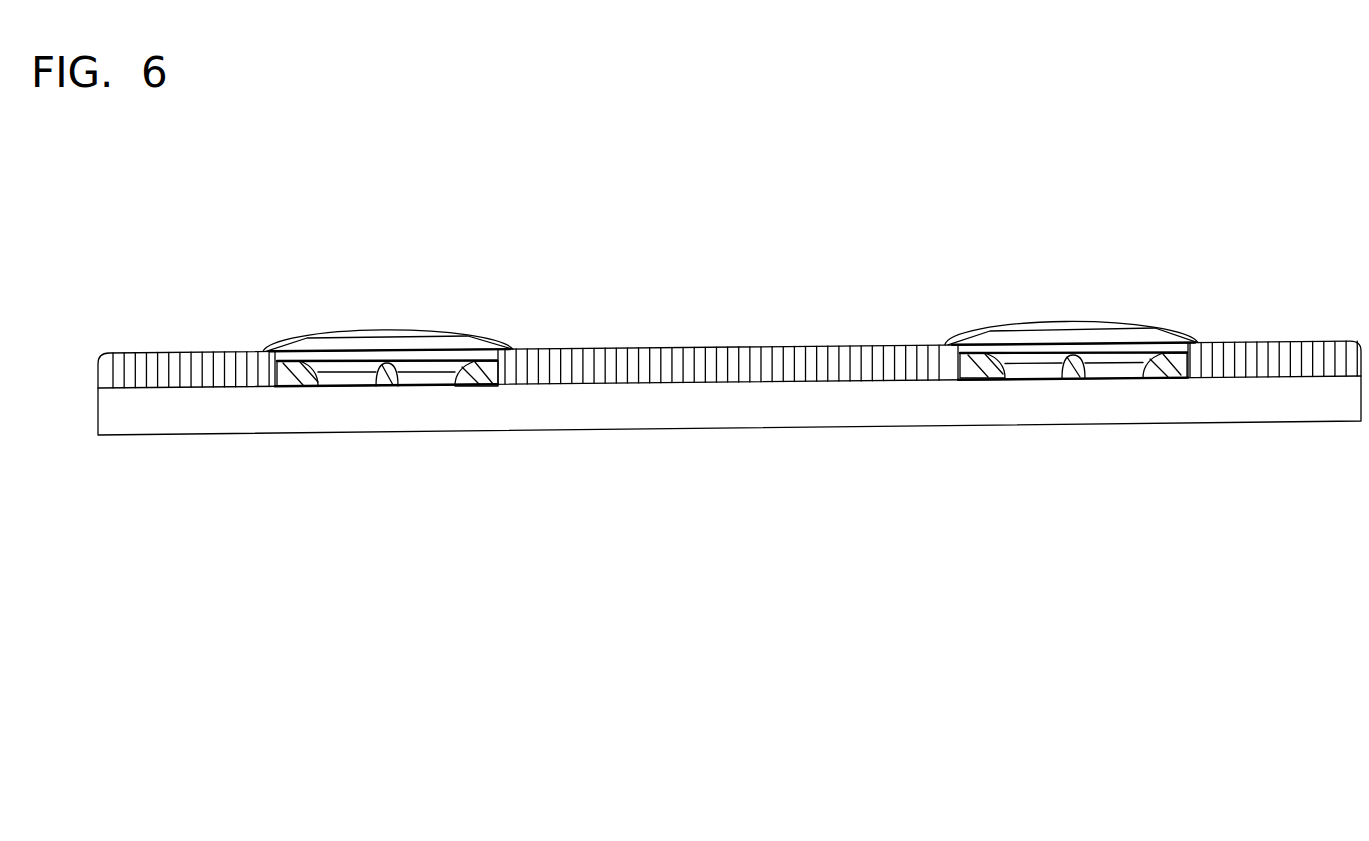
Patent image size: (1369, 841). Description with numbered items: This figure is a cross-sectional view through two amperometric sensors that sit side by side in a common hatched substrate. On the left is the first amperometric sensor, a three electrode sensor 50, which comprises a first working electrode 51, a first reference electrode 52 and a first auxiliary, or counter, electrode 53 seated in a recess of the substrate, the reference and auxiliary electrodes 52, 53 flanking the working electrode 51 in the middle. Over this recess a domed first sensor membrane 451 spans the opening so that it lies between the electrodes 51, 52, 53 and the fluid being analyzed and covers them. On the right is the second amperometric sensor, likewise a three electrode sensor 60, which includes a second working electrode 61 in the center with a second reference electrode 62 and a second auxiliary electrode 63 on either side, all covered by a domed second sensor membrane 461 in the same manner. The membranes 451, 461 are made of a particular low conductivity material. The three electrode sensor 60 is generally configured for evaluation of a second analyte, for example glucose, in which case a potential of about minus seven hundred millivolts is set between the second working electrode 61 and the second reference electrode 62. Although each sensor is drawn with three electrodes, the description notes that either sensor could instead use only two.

The three electrode sensor 50 is at (407, 359).
The first sensor membrane 451 is at (307, 338).
The first working electrode 51 is at (383, 382).
The first reference electrode 52 is at (296, 382).
The first auxiliary electrode 53 is at (475, 382).
The three electrode sensor 60 is at (1040, 342).
The second sensor membrane 461 is at (1155, 327).
The second working electrode 61 is at (1075, 373).
The second reference electrode 62 is at (1163, 373).
The second auxiliary electrode 63 is at (985, 373).